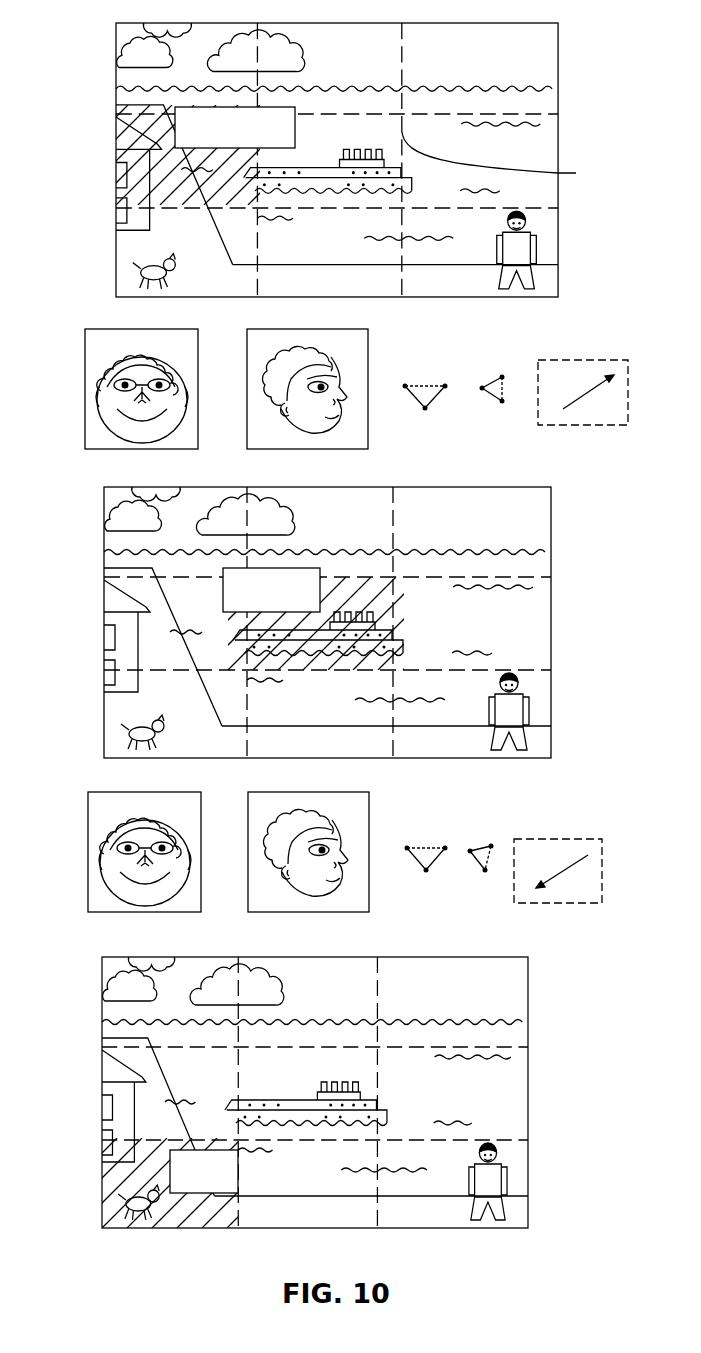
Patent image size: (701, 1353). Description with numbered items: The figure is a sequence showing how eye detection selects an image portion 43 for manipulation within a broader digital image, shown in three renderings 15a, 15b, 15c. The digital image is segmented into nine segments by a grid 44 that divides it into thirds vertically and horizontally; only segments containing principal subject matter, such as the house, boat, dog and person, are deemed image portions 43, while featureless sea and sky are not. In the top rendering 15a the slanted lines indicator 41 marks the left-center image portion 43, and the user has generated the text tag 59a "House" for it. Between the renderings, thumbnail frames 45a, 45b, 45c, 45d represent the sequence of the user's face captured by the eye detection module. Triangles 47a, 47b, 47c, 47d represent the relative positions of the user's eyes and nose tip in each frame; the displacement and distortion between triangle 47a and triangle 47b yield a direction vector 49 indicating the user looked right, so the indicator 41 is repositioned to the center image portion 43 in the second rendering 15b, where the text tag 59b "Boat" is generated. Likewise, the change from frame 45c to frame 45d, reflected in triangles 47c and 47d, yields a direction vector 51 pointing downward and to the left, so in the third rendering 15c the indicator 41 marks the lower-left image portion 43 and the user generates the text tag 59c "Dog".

The digital image 15a is at (536, 62).
The digital image 15b is at (528, 526).
The digital image 15c is at (506, 996).
The slanted lines indicator 41 is at (170, 206).
The image portion 43 is at (334, 153).
The grid 44 is at (507, 161).
The frame 45a is at (85, 368).
The frame 45b is at (368, 413).
The frame 45c is at (88, 828).
The frame 45d is at (369, 876).
The triangle 47a is at (422, 386).
The triangle 47b is at (492, 378).
The triangle 47c is at (422, 848).
The triangle 47d is at (492, 846).
The direction vector 49 is at (584, 396).
The direction vector 51 is at (560, 872).
The text tag 59a is at (296, 102).
The text tag 59b is at (316, 564).
The text tag 59c is at (240, 1176).